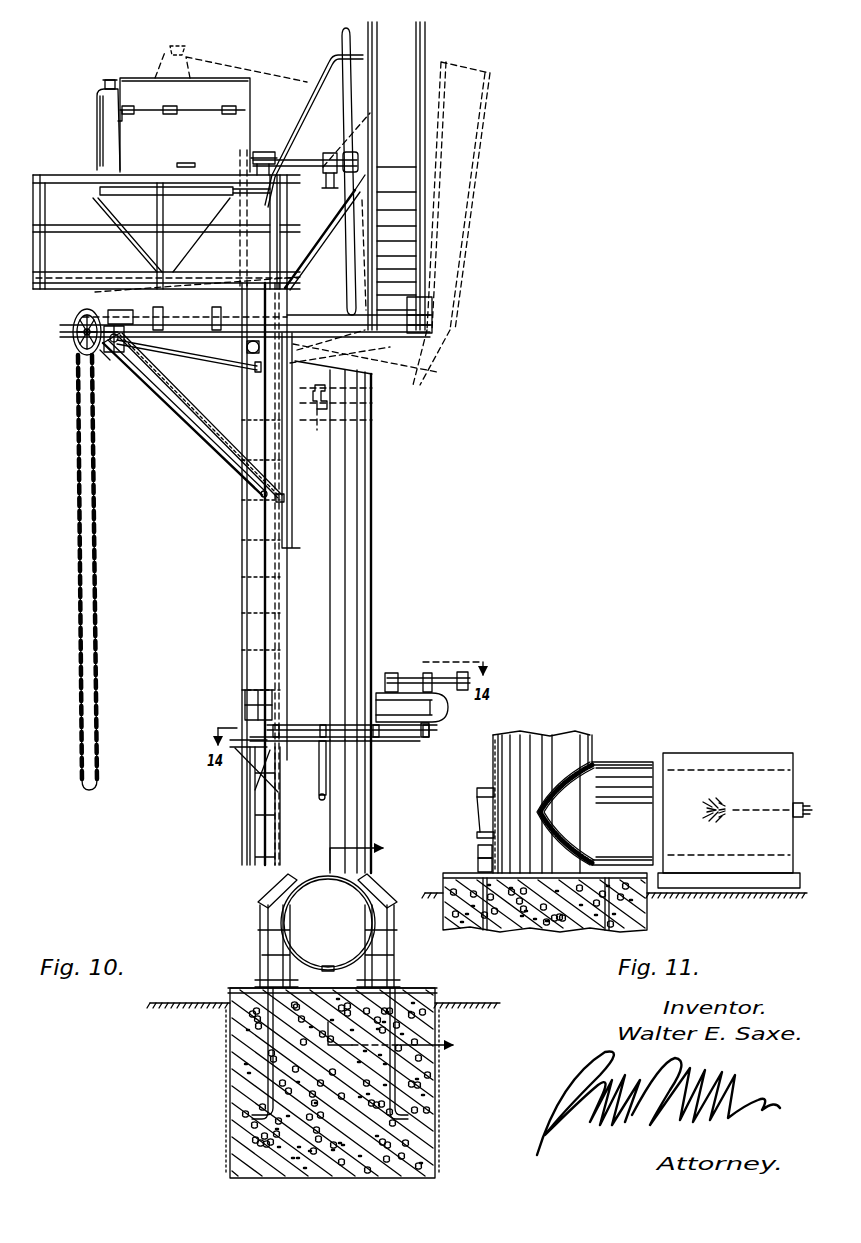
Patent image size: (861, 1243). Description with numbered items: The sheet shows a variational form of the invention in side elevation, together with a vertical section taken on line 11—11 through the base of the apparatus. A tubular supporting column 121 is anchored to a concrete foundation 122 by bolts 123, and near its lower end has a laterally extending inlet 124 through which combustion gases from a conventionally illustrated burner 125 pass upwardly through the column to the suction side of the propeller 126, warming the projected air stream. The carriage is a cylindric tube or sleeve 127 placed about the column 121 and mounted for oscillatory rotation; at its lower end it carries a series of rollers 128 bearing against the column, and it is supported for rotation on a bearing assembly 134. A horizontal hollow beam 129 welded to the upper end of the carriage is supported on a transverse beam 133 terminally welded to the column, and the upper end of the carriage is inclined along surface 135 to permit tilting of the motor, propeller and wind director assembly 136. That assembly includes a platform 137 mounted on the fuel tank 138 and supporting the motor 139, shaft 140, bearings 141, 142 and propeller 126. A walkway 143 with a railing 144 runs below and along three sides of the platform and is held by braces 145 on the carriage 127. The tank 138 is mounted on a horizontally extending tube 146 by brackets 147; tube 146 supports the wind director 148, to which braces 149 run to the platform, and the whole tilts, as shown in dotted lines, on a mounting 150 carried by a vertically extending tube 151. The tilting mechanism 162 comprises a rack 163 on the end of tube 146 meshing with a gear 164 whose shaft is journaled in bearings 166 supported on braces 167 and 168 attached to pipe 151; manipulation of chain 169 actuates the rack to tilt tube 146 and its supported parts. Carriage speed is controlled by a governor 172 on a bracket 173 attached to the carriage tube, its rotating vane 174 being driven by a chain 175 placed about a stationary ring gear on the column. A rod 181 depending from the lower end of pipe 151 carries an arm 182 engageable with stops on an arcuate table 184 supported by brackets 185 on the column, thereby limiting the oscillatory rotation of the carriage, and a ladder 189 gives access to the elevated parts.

In FIG. 10, the section line 11— 11 is at (402, 948).
In FIG. 10, the tubular supporting column 121 is at (372, 812).
In FIG. 11, the tubular supporting column 121 is at (594, 745).
In FIG. 10, the concrete foundation 122 is at (432, 997).
In FIG. 11, the concrete foundation 122 is at (548, 931).
In FIG. 10, the bolt 123 is at (253, 992).
In FIG. 11, the bolt 123 is at (485, 931).
In FIG. 10, the laterally extending inlet 124 is at (353, 893).
In FIG. 11, the laterally extending inlet 124 is at (630, 763).
In FIG. 11, the burner 125 is at (735, 778).
In FIG. 10, the propeller 126 is at (345, 42).
In FIG. 10, the cylindric tube or sleeve 127 is at (367, 553).
In FIG. 10, the rollers 128 is at (345, 742).
In FIG. 10, the horizontal hollow beam 129 is at (358, 392).
In FIG. 10, the transverse beam 133 is at (360, 421).
In FIG. 10, the bearing assembly 134 is at (376, 406).
In FIG. 10, the inclined surface 135 is at (405, 357).
In FIG. 10, the motor, propeller and wind director assembly 136 is at (150, 72).
In FIG. 10, the platform 137 is at (308, 197).
In FIG. 10, the fuel tank 138 is at (232, 262).
In FIG. 10, the motor 139 is at (120, 124).
In FIG. 10, the shaft 140 is at (330, 160).
In FIG. 10, the bearing 141 is at (265, 152).
In FIG. 10, the bearing 142 is at (331, 153).
In FIG. 10, the walkway 143 is at (92, 270).
In FIG. 10, the railing 144 is at (57, 157).
In FIG. 10, the braces 145 is at (222, 423).
In FIG. 10, the horizontally extending tube 146 is at (312, 316).
In FIG. 10, the brackets 147 is at (197, 322).
In FIG. 10, the wind director 148 is at (410, 70).
In FIG. 10, the braces 149 is at (338, 53).
In FIG. 10, the mounting 150 is at (244, 347).
In FIG. 10, the vertically extending tube 151 is at (255, 551).
In FIG. 10, the tilting mechanism 162 is at (73, 322).
In FIG. 10, the rack 163 is at (118, 372).
In FIG. 10, the gear 164 is at (130, 312).
In FIG. 10, the bearings 166 is at (108, 352).
In FIG. 10, the brace 167 is at (187, 358).
In FIG. 10, the brace 168 is at (192, 432).
In FIG. 10, the chain 169 is at (96, 516).
In FIG. 10, the governor 172 is at (447, 659).
In FIG. 10, the bracket 173 is at (450, 712).
In FIG. 10, the governor vane 174 is at (397, 672).
In FIG. 10, the chain 175 is at (430, 738).
In FIG. 10, the rod 181 is at (250, 697).
In FIG. 10, the arm 182 is at (240, 755).
In FIG. 10, the arcuate table 184 is at (263, 765).
In FIG. 10, the brackets 185 is at (270, 768).
In FIG. 10, the ladder 189 is at (250, 857).